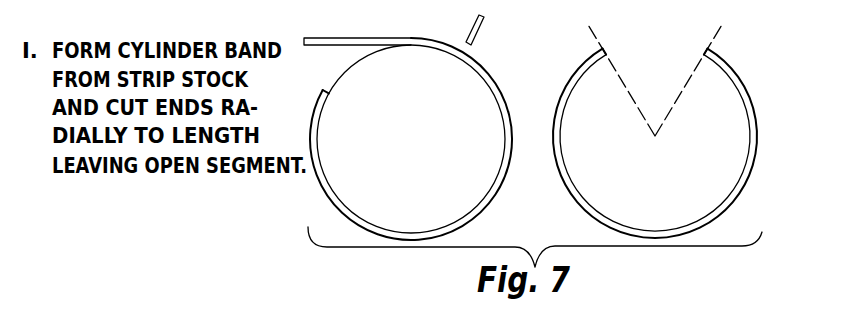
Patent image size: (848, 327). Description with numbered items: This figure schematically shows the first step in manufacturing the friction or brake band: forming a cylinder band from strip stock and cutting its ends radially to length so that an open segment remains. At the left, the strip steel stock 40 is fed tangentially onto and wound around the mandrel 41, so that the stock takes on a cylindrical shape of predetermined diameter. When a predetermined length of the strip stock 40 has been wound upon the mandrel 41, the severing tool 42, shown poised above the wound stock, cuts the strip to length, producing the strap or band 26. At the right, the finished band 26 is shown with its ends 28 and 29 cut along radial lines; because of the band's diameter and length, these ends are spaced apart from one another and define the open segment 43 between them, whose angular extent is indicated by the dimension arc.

The cylindrical band 26 is at (482, 212).
The end of band 28 is at (635, 68).
The end of band 29 is at (701, 51).
The strip steel stock 40 is at (364, 43).
The mandrel 41 is at (357, 88).
The severing tool 42 is at (475, 30).
The open segment 43 is at (716, 35).